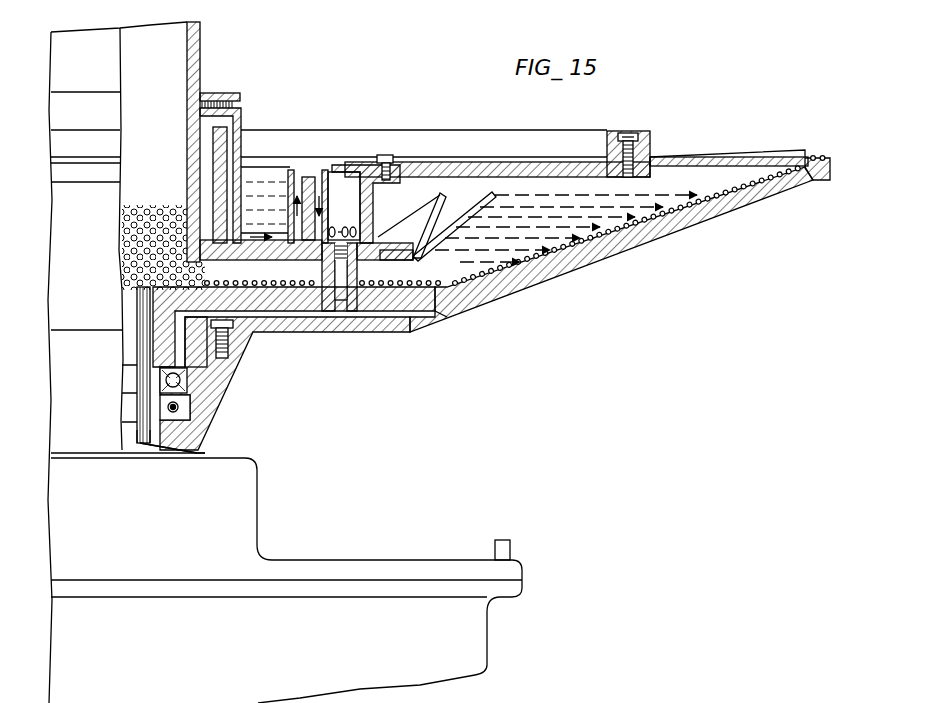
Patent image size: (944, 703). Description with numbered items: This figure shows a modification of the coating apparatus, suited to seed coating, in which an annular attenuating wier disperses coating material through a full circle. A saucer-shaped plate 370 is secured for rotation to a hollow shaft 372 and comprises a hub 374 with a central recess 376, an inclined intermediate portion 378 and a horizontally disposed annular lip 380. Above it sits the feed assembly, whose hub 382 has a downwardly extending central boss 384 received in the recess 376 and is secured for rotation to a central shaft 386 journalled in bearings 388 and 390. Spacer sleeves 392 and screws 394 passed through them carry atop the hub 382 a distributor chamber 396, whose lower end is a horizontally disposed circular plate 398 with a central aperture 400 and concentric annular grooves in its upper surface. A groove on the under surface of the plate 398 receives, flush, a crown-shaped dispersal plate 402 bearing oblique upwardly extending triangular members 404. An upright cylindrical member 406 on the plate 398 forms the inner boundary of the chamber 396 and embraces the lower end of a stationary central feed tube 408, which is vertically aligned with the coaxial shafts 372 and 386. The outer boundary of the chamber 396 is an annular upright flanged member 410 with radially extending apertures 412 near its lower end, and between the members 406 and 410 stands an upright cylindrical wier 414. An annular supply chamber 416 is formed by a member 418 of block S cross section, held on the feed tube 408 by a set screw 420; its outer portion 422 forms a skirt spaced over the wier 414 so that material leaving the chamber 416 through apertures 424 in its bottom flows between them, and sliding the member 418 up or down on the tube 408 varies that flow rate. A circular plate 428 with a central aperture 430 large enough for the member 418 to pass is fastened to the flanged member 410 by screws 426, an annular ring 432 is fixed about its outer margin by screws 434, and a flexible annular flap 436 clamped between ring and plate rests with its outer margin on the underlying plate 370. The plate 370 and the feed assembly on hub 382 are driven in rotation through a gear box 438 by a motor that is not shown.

The saucer-shaped plate 370 is at (550, 296).
The hollow shaft 372 is at (205, 453).
The hub 374 is at (220, 392).
The central recess 376 is at (183, 353).
The inclined intermediate portion 378 is at (618, 249).
The annular lip 380 is at (815, 182).
The hub 382 is at (167, 308).
The central boss 384 is at (153, 338).
The central shaft 386 is at (140, 382).
The bearing 388 is at (160, 385).
The bearing 390 is at (187, 410).
The spacer sleeve 392 is at (412, 313).
The screw 394 is at (350, 303).
The distributor chamber 396 is at (346, 206).
The circular plate 398 is at (323, 258).
The central aperture 400 is at (207, 258).
The dispersal plate 402 is at (413, 262).
The triangular member 404 is at (474, 215).
The cylindrical member 406 is at (220, 148).
The central feed tube 408 is at (200, 38).
The flanged member 410 is at (366, 222).
The radially extending aperture 412 is at (337, 230).
The wier 414 is at (308, 177).
The annular supply chamber 416 is at (265, 200).
The member of block S cross section 418 is at (241, 110).
The set screw 420 is at (240, 93).
The outer portion 422 is at (330, 168).
The aperture 424 is at (258, 228).
The screw 426 is at (388, 155).
The circular plate 428 is at (490, 165).
The central aperture 430 is at (336, 166).
The annular ring 432 is at (651, 160).
The screw 434 is at (627, 133).
The flexible annular flap 436 is at (718, 157).
The gear box 438 is at (305, 572).